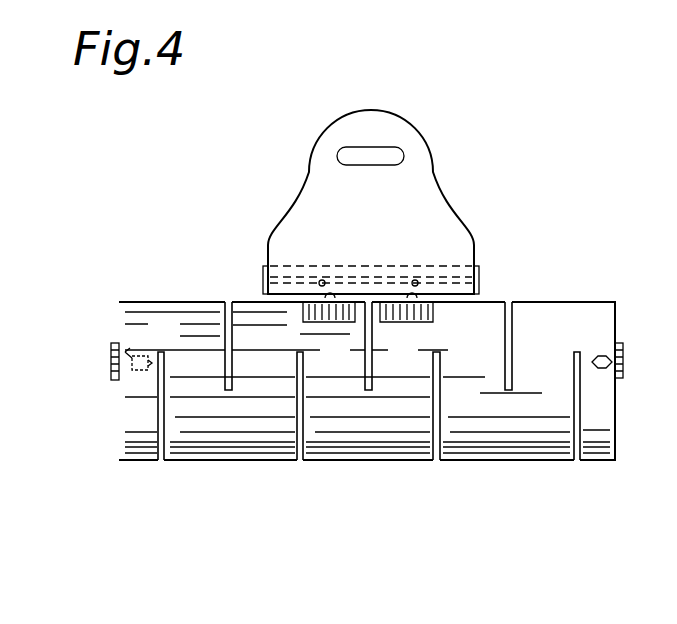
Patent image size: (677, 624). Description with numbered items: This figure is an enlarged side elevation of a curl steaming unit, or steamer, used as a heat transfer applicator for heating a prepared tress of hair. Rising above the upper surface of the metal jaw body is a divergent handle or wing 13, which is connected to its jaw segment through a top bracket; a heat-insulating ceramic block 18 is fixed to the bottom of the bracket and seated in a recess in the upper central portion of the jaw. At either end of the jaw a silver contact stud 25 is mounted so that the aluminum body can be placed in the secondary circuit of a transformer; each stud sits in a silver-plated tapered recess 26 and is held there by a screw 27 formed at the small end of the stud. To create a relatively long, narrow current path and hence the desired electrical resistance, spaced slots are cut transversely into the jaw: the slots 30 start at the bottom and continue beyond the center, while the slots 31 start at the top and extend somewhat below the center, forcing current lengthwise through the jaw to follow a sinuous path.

The handle or wing 13 is at (412, 123).
The heat-insulating ceramic block 18 is at (403, 322).
The contact stud 25 is at (112, 362).
The tapered recess 26 is at (125, 352).
The screw 27 is at (140, 367).
The slot 30 is at (435, 460).
The slot 31 is at (227, 300).